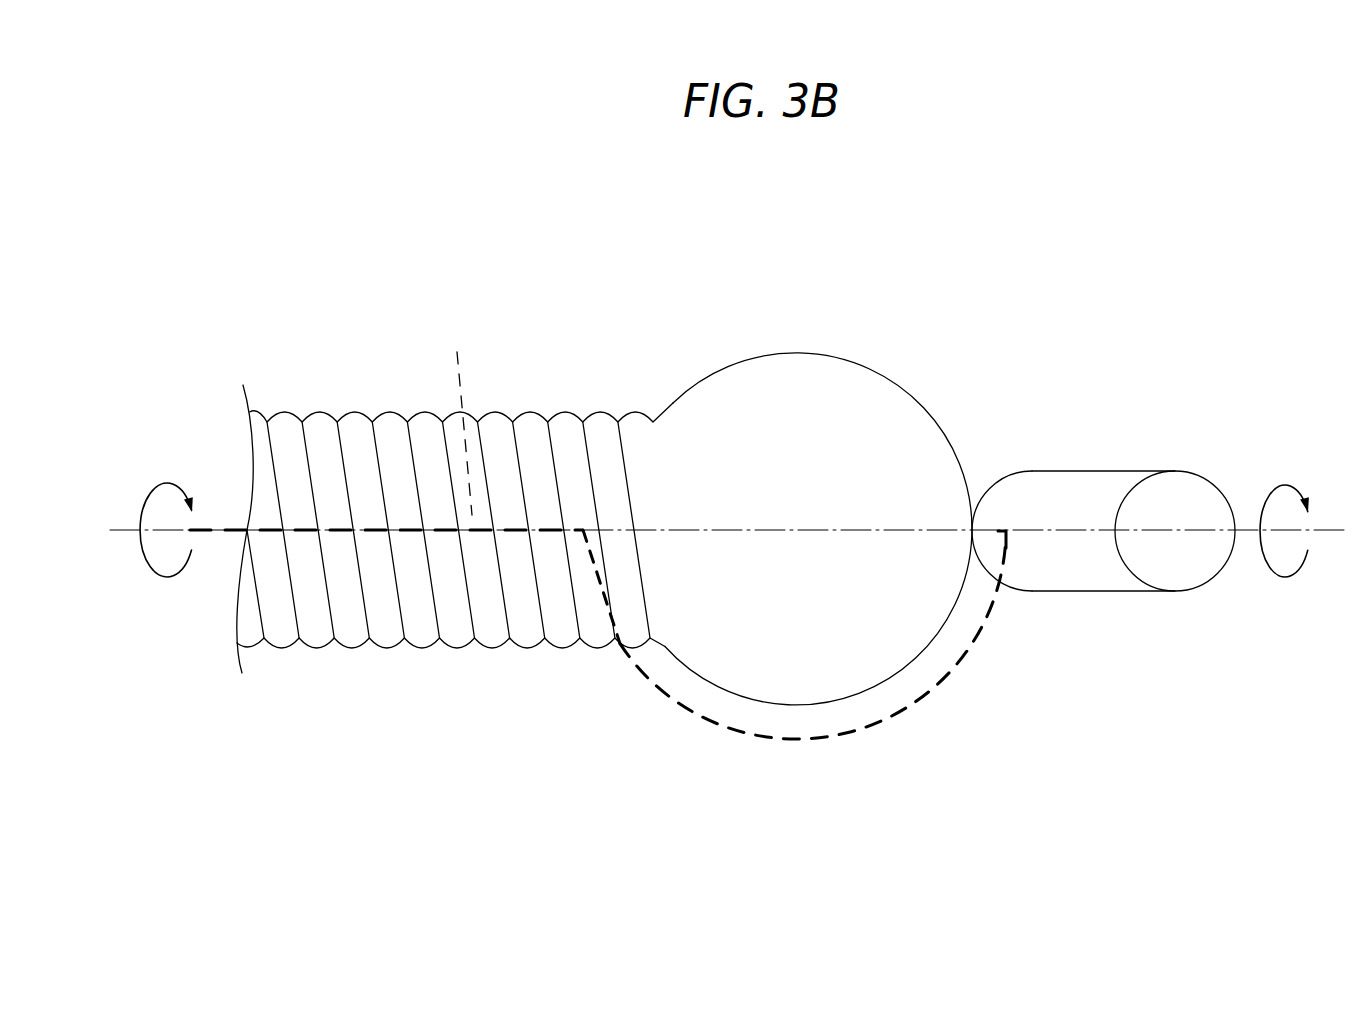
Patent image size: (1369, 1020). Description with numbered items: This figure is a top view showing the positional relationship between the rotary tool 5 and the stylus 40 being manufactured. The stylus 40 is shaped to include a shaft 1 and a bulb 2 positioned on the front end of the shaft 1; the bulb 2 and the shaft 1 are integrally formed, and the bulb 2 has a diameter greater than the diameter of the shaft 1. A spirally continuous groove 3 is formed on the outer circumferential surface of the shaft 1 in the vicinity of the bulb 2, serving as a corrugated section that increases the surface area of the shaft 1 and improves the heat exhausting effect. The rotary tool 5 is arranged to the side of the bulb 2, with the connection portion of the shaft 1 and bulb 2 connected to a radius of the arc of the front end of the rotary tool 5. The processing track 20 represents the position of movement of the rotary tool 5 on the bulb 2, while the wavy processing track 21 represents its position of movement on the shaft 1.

The stylus 40 is at (603, 322).
The shaft 1 is at (533, 470).
The bulb 2 is at (797, 396).
The groove 3 is at (495, 626).
The rotary tool 5 is at (1068, 504).
The processing track 20 is at (948, 683).
The wavy processing track 21 is at (457, 418).